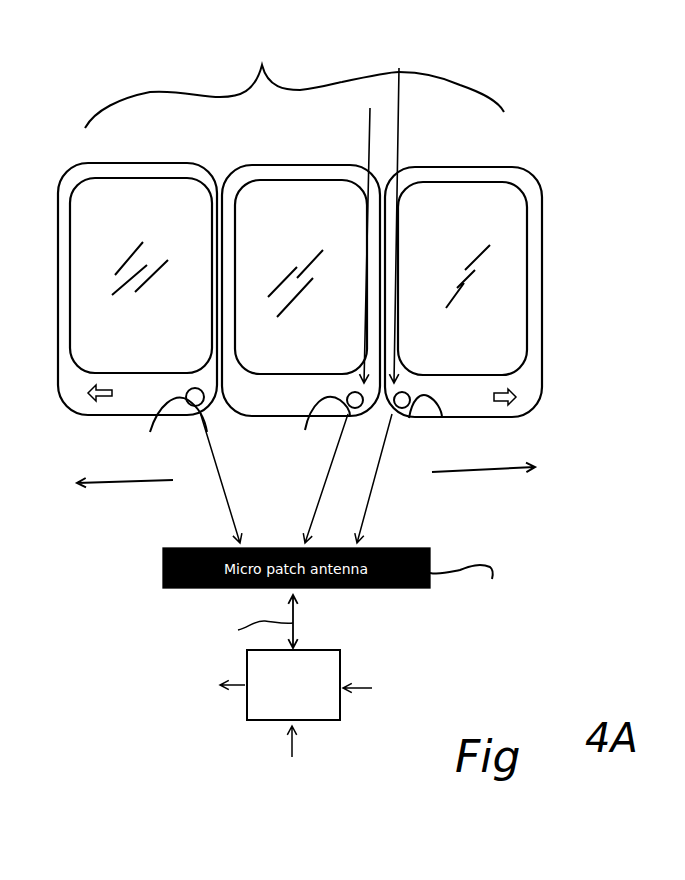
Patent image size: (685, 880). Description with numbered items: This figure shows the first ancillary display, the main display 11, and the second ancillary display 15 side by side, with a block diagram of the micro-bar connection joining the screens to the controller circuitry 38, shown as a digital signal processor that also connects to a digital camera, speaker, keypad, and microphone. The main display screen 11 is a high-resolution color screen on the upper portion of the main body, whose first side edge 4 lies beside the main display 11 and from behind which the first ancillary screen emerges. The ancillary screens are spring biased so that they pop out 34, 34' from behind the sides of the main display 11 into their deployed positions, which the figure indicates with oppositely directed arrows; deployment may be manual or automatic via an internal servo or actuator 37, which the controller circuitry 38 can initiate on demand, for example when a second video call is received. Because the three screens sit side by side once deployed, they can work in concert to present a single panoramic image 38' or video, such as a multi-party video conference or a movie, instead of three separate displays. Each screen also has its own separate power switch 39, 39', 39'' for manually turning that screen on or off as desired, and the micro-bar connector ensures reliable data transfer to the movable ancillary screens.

The first side edge 4 is at (115, 163).
The main display screen 11 is at (305, 164).
The second ancillary display screen 15 is at (515, 167).
The single panoramic image 38' is at (294, 192).
The power switch 39 is at (159, 465).
The power switch 39' is at (316, 325).
The power switch 39'' is at (446, 305).
The internal servo or actuator 37 is at (528, 392).
The pop-out deployment 34 is at (125, 512).
The pop-out deployment 34' is at (483, 491).
The controller circuitry 38 is at (290, 720).